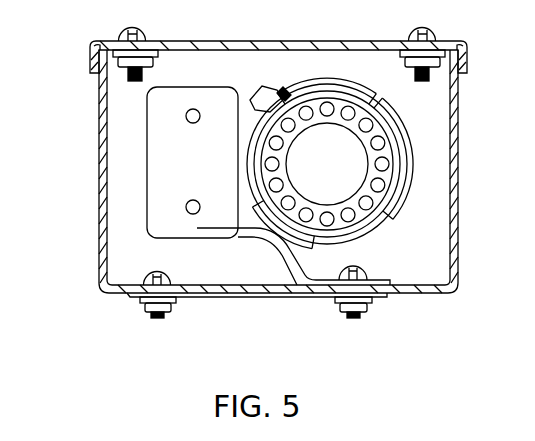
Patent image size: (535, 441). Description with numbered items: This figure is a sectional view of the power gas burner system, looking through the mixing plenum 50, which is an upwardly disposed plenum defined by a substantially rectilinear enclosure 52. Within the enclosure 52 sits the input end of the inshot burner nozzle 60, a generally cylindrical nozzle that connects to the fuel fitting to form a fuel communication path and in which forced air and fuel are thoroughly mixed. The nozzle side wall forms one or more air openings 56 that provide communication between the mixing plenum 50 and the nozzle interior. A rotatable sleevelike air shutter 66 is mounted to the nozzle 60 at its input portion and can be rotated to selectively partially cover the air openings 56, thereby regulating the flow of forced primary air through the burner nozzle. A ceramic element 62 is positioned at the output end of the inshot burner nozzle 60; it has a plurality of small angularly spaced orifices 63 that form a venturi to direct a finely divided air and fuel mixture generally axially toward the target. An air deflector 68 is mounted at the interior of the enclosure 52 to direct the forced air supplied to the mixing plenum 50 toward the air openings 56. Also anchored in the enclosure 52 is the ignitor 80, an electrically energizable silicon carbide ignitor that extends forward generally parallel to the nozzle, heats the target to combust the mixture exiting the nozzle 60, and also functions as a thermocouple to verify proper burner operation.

The mixing plenum 50 is at (434, 161).
The enclosure 52 is at (99, 134).
The air openings 56 is at (337, 91).
The inshot burner nozzle 60 is at (385, 108).
The ceramic element 62 is at (378, 199).
The orifices 63 is at (371, 182).
The air shutter 66 is at (283, 85).
The air deflector 68 is at (297, 256).
The ignitor 80 is at (160, 172).